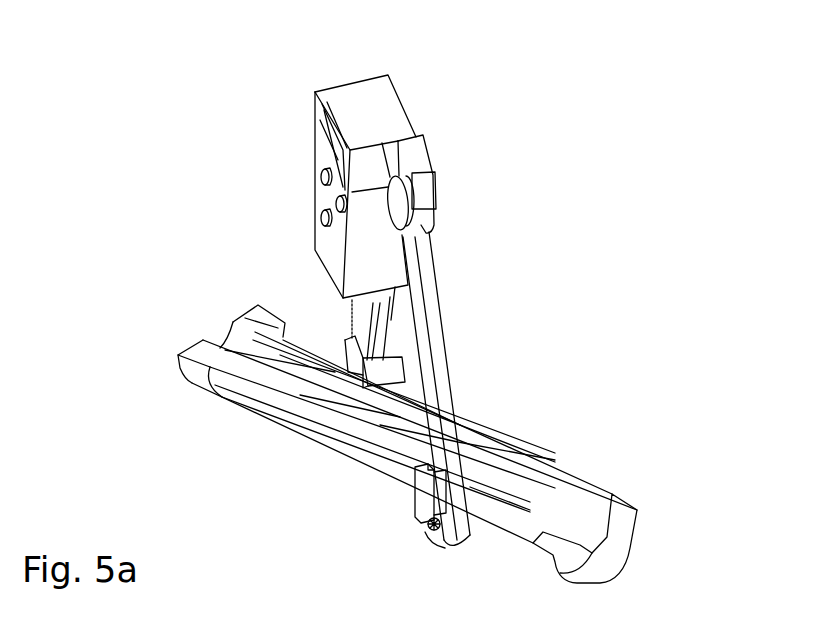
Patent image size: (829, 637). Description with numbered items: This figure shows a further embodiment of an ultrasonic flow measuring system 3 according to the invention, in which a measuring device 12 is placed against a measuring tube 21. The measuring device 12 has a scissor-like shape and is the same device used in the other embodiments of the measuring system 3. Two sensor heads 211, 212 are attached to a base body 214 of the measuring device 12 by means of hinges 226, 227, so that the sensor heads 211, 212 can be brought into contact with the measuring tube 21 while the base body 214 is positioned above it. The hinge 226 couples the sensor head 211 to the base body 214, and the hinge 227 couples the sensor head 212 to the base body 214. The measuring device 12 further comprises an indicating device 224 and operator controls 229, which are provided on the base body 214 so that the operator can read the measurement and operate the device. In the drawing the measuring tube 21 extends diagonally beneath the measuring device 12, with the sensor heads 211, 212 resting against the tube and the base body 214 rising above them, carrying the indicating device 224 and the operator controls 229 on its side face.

The ultrasonic flow measuring system 3 is at (585, 115).
The measuring device 12 is at (360, 110).
The measuring tube 21 is at (543, 478).
The sensor head 211 is at (340, 423).
The sensor head 212 is at (413, 477).
The base body 214 is at (400, 147).
The indicating device 224 is at (328, 138).
The hinge 226 is at (345, 342).
The hinge 227 is at (427, 530).
The operator controls 229 is at (323, 170).